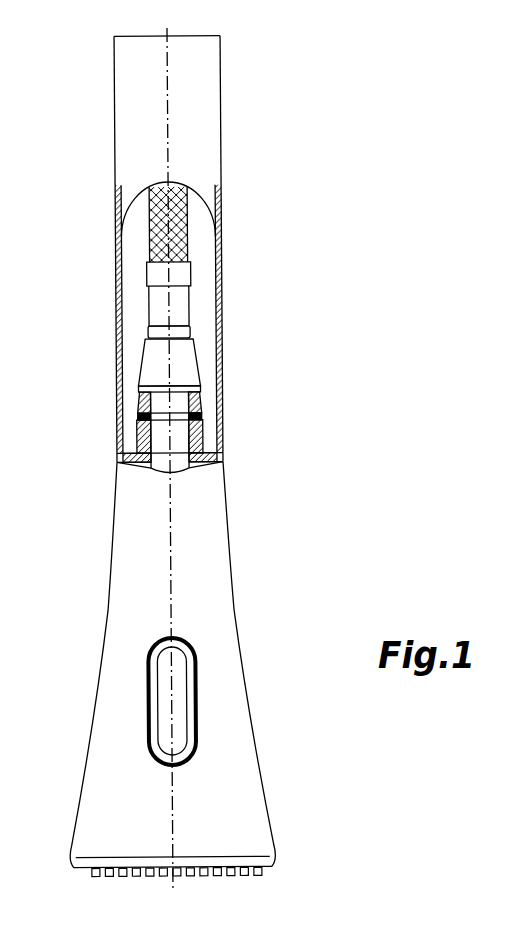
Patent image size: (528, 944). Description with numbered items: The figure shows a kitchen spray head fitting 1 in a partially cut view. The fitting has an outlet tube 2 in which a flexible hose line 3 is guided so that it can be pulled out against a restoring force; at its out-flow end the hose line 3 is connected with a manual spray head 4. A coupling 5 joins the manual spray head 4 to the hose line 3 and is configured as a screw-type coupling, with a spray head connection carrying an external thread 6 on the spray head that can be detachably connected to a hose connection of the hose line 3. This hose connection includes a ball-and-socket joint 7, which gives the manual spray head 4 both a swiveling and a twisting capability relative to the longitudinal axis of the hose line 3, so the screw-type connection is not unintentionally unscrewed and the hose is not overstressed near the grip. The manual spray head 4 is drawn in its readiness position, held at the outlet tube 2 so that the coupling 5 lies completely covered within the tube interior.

The kitchen spray head fitting 1 is at (211, 460).
The outlet tube 2 is at (223, 262).
The flexible hose line 3 is at (190, 227).
The manual spray head 4 is at (218, 572).
The coupling 5 is at (212, 392).
The external thread 6 is at (198, 432).
The ball-and-socket joint 7 is at (200, 360).